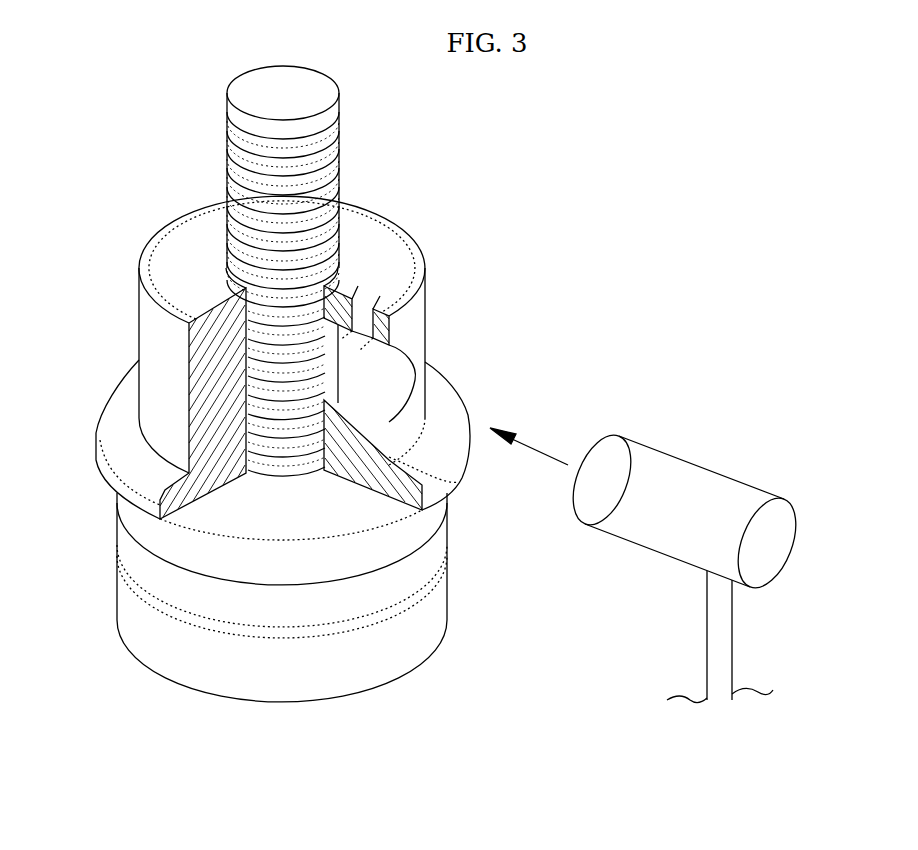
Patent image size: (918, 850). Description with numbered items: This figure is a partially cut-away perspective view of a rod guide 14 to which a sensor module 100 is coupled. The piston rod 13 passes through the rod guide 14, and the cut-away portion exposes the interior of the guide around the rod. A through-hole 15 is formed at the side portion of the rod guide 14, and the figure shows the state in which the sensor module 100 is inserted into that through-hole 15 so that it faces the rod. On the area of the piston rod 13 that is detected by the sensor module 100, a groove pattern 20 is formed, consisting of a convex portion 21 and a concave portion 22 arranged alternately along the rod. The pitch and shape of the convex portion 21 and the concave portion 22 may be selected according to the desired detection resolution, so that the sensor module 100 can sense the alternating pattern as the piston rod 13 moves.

The piston rod 13 is at (303, 404).
The rod guide 14 is at (160, 350).
The through-hole 15 is at (427, 380).
The groove pattern 20 is at (356, 271).
The convex portion 21 is at (340, 122).
The concave portion 22 is at (340, 150).
The sensor module 100 is at (715, 428).